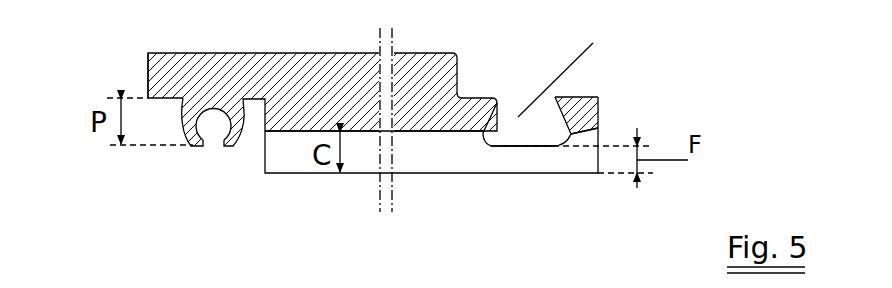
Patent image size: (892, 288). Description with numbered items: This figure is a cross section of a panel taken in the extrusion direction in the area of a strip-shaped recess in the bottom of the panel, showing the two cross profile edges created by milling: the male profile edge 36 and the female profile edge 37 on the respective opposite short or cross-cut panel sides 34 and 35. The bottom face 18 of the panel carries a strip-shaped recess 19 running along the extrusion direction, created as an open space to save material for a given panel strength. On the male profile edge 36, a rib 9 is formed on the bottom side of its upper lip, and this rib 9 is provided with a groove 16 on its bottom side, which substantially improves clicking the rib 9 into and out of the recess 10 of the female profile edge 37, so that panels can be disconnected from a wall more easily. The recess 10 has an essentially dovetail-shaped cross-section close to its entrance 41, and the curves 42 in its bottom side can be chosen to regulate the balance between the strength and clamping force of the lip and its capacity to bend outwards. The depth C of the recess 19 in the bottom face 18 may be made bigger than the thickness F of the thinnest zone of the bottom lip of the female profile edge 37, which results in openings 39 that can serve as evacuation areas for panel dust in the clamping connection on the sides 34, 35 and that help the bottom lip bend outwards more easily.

The rib 9 is at (233, 147).
The recess 10 is at (593, 43).
The groove 16 is at (213, 127).
The bottom face 18 is at (508, 150).
The strip-shaped recess 19 is at (452, 165).
The panel side 34 is at (148, 68).
The panel side 35 is at (598, 98).
The male profile edge 36 is at (230, 62).
The female profile edge 37 is at (482, 99).
The opening 39 is at (505, 148).
The entrance 41 is at (497, 103).
The curve 42 is at (598, 128).